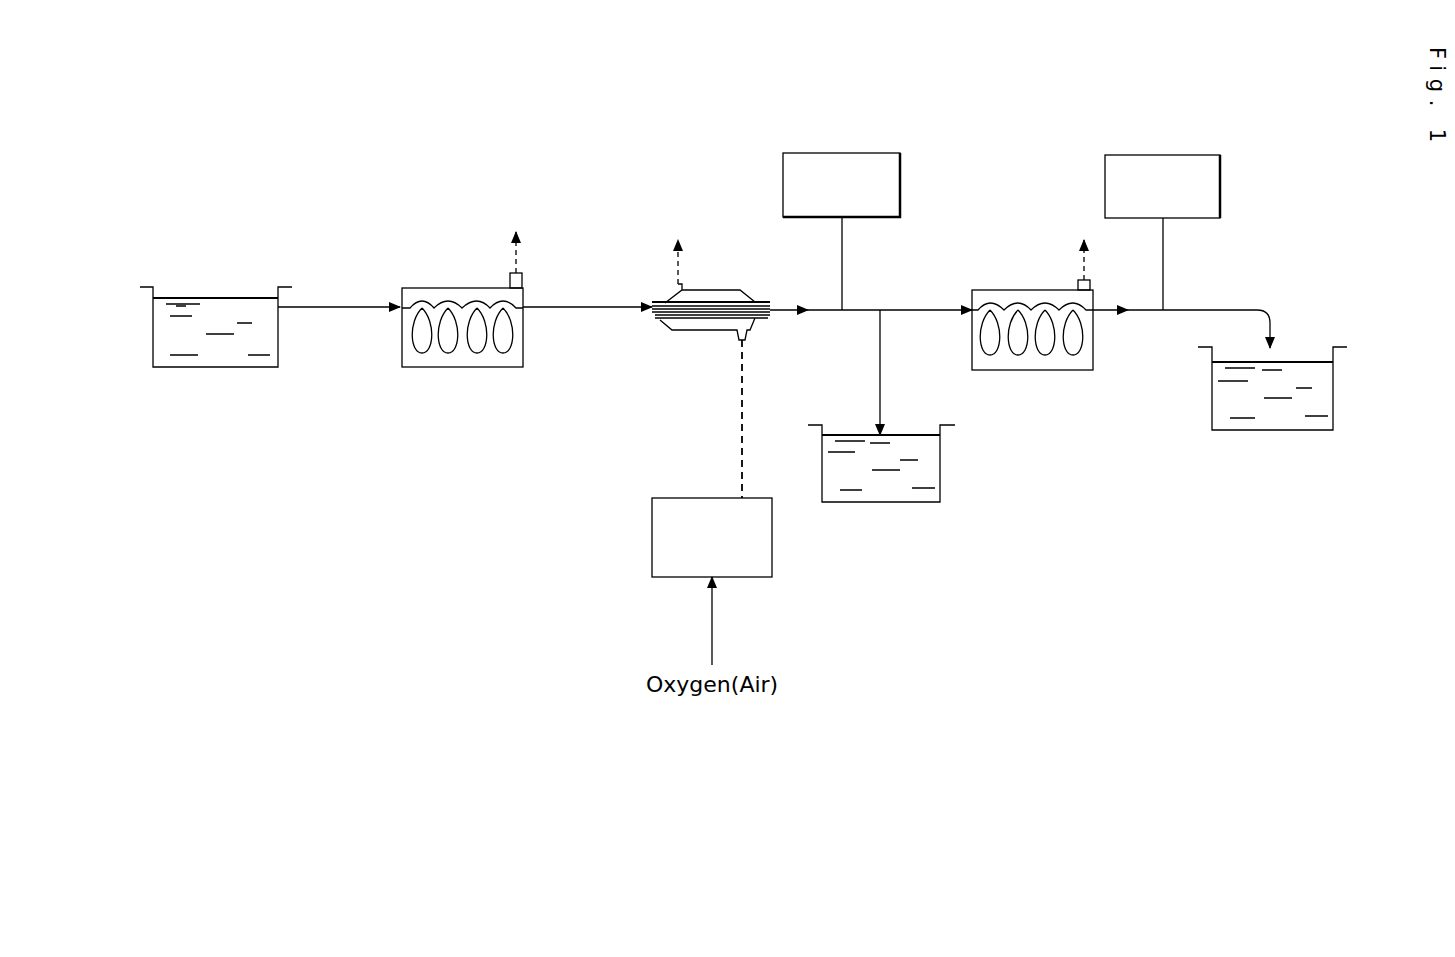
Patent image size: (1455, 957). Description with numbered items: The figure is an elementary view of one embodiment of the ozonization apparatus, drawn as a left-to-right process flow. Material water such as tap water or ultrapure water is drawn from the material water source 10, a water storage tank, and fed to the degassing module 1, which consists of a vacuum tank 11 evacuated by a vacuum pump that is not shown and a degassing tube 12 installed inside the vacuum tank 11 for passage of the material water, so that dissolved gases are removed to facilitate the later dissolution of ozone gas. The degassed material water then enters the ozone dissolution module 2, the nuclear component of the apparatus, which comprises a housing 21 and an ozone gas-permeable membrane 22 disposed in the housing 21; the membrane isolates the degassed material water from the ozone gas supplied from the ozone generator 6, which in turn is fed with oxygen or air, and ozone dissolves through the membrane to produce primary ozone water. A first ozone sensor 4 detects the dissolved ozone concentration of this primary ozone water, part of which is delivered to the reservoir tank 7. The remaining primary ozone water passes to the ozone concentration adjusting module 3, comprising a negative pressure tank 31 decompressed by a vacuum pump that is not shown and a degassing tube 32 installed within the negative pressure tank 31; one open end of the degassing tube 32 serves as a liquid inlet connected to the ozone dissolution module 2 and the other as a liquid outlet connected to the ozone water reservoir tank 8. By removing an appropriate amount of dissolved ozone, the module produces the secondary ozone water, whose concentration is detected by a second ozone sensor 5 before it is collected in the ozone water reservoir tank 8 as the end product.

The material water source 10 is at (153, 339).
The degassing module 1 is at (440, 311).
The vacuum tank 11 is at (401, 347).
The degassing tube 12 is at (462, 307).
The ozone dissolution module 2 is at (693, 338).
The ozone gas-permeable membrane 22 is at (720, 305).
The housing 21 is at (746, 321).
The ozone generator 6 is at (652, 549).
The first ozone sensor 4 is at (822, 151).
The reservoir tank 7 is at (881, 504).
The ozone concentration adjusting module 3 is at (1060, 308).
The negative pressure tank 31 is at (1095, 336).
The degassing tube 32 is at (1055, 310).
The second ozone sensor 5 is at (1185, 152).
The ozone water reservoir tank 8 is at (1335, 386).